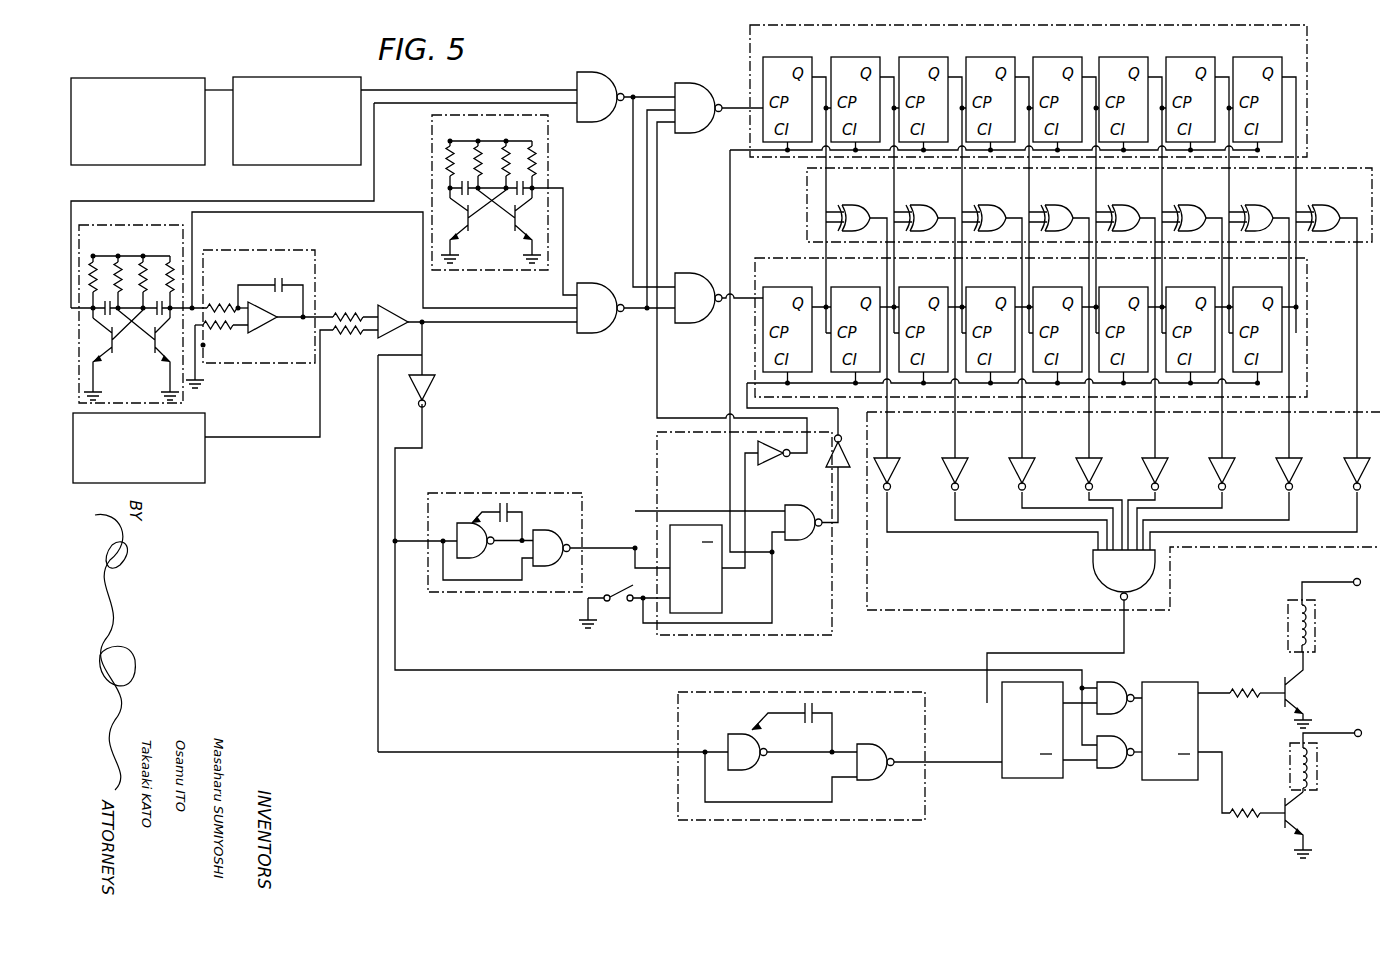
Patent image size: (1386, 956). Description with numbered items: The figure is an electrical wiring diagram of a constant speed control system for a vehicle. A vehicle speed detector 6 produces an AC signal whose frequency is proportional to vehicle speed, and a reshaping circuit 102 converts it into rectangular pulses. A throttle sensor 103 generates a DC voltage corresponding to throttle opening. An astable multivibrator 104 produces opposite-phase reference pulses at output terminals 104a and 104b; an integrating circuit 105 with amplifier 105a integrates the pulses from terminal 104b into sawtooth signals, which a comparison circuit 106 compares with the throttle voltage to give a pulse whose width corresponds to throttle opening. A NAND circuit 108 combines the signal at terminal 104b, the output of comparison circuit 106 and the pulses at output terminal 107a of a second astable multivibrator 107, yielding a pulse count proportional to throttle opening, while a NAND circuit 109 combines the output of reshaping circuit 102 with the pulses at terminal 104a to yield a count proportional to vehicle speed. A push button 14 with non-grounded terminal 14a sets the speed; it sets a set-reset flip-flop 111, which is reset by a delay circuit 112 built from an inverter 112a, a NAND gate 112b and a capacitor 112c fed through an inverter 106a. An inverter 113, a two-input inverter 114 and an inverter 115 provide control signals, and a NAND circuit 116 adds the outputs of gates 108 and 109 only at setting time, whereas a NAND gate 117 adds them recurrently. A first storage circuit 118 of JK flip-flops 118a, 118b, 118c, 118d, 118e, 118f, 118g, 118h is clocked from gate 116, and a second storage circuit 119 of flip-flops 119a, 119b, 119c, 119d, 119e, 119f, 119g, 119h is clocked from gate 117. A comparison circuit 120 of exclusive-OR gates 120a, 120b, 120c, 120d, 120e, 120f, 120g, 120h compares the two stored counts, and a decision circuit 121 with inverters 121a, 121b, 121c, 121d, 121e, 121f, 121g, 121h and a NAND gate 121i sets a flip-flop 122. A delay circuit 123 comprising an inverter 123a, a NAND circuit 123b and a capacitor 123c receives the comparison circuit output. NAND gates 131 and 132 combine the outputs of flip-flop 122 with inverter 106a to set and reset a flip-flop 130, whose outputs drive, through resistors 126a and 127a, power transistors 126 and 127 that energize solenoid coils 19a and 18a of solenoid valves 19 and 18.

The vehicle speed detector 6 is at (146, 167).
The reshaping circuit 102 is at (283, 136).
The throttle sensor 103 is at (207, 452).
The astable multivibrator 104 is at (324, 313).
The output terminal 104a is at (95, 320).
The output terminal 104b is at (177, 300).
The integrating circuit 105 is at (259, 322).
The amplifier 105a is at (270, 373).
The comparison circuit 106 is at (394, 309).
The inverter 106a is at (435, 378).
The astable multivibrator 107 is at (502, 205).
The output terminal 107a is at (548, 188).
The NAND circuit 108 is at (616, 291).
The NAND circuit 109 is at (608, 118).
The set-reset flip-flop 111 is at (686, 519).
The delay circuit 112 is at (516, 520).
The inverter 112a is at (462, 520).
The NAND gate 112b is at (548, 530).
The capacitor 112c is at (503, 503).
The inverter 113 is at (768, 468).
The two-input inverter 114 is at (808, 546).
The inverter 115 is at (830, 476).
The NAND circuit 116 is at (716, 103).
The NAND gate 117 is at (707, 270).
The first storage circuit 118 is at (1041, 179).
The JK flip-flop 118a is at (805, 58).
The JK flip-flop 118b is at (873, 58).
The JK flip-flop 118c is at (941, 58).
The JK flip-flop 118d is at (1008, 58).
The JK flip-flop 118e is at (1075, 58).
The JK flip-flop 118f is at (1141, 58).
The JK flip-flop 118g is at (1208, 58).
The JK flip-flop 118h is at (1310, 45).
The second storage circuit 119 is at (1020, 321).
The JK flip-flop 119a is at (800, 287).
The JK flip-flop 119b is at (868, 287).
The JK flip-flop 119c is at (936, 287).
The JK flip-flop 119d is at (1003, 287).
The JK flip-flop 119e is at (1070, 287).
The JK flip-flop 119f is at (1136, 287).
The JK flip-flop 119g is at (1203, 287).
The JK flip-flop 119h is at (1270, 287).
The comparison circuit 120 is at (1062, 313).
The exclusive-OR gate 120a is at (858, 208).
The exclusive-OR gate 120b is at (926, 208).
The exclusive-OR gate 120c is at (994, 208).
The exclusive-OR gate 120d is at (1061, 208).
The exclusive-OR gate 120e is at (1128, 208).
The exclusive-OR gate 120f is at (1194, 208).
The exclusive-OR gate 120g is at (1261, 208).
The exclusive-OR gate 120h is at (1328, 208).
The decision circuit 121 is at (1123, 557).
The inverter 121a is at (900, 460).
The inverter 121b is at (968, 460).
The inverter 121c is at (1035, 460).
The inverter 121d is at (1102, 460).
The inverter 121e is at (1168, 460).
The inverter 121f is at (1235, 460).
The inverter 121g is at (1302, 460).
The inverter 121h is at (1340, 480).
The NAND gate 121i is at (1090, 564).
The set-reset flip-flop 122 is at (1002, 736).
The delay circuit 123 is at (690, 756).
The inverter 123a is at (735, 732).
The NAND circuit 123b is at (880, 784).
The capacitor 123c is at (815, 705).
The power transistor 126 is at (1300, 690).
The resistor 126a is at (1262, 688).
The power transistor 127 is at (1300, 818).
The resistor 127a is at (1252, 808).
The set-reset flip-flop 130 is at (1163, 670).
The NAND gate 131 is at (1125, 672).
The NAND gate 132 is at (1068, 762).
The push button 14 is at (611, 607).
The non-grounded terminal 14a is at (633, 578).
The solenoid valve 18 is at (1332, 750).
The solenoid coil 18a is at (1318, 770).
The solenoid valve 19 is at (1307, 605).
The solenoid coil 19a is at (1330, 614).